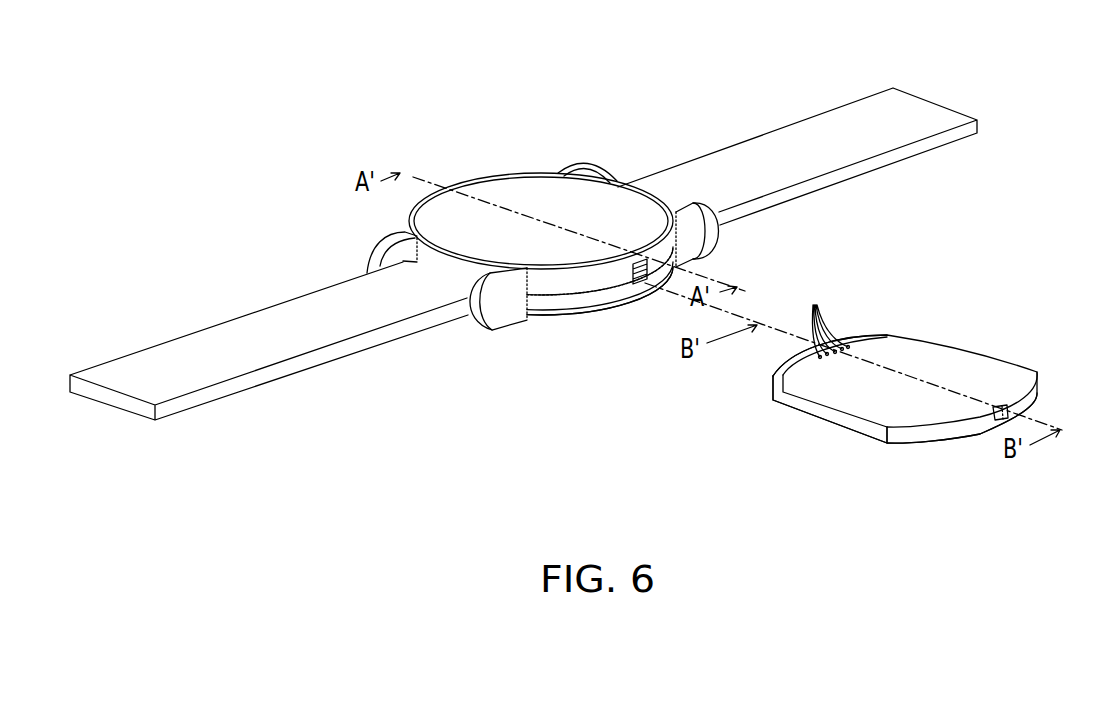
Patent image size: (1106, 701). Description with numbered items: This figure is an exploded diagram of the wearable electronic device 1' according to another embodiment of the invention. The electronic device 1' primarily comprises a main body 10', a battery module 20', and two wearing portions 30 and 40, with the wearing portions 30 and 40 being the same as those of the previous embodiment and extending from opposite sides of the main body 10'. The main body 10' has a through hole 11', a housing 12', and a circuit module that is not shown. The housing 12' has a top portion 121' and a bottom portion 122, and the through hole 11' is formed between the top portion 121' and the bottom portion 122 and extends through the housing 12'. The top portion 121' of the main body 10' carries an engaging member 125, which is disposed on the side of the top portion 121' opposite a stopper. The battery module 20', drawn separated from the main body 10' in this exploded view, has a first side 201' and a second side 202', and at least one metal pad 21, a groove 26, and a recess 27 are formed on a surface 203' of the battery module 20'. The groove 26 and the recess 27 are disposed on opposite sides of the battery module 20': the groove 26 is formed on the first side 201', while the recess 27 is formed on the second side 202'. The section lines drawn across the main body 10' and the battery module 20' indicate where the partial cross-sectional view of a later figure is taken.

The wearable electronic device 1' is at (196, 47).
The main body 10' is at (543, 218).
The through hole 11' is at (587, 330).
The housing 12' is at (600, 334).
The top portion 121' is at (600, 313).
The bottom portion 122 is at (633, 317).
The engaging member 125 is at (646, 260).
The battery module 20' is at (905, 361).
The first side 201' is at (962, 448).
The second side 202' is at (783, 409).
The surface 203' is at (878, 316).
The metal pad 21 is at (826, 318).
The groove 26 is at (773, 378).
The recess 27 is at (1002, 406).
The wearing portion 30 is at (765, 152).
The wearing portion 40 is at (245, 333).